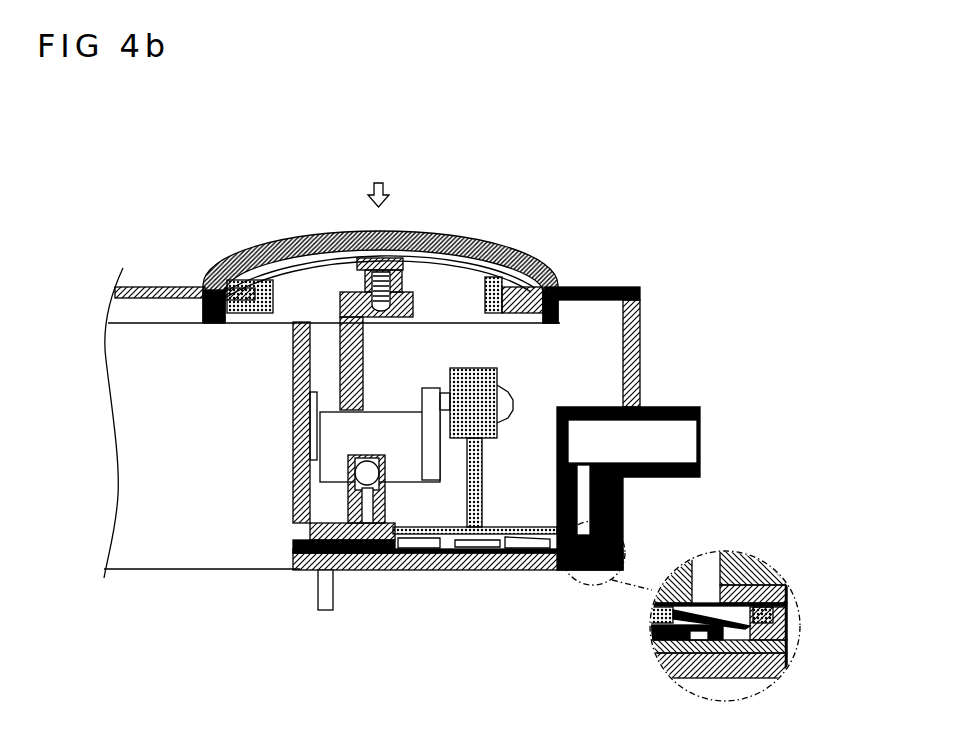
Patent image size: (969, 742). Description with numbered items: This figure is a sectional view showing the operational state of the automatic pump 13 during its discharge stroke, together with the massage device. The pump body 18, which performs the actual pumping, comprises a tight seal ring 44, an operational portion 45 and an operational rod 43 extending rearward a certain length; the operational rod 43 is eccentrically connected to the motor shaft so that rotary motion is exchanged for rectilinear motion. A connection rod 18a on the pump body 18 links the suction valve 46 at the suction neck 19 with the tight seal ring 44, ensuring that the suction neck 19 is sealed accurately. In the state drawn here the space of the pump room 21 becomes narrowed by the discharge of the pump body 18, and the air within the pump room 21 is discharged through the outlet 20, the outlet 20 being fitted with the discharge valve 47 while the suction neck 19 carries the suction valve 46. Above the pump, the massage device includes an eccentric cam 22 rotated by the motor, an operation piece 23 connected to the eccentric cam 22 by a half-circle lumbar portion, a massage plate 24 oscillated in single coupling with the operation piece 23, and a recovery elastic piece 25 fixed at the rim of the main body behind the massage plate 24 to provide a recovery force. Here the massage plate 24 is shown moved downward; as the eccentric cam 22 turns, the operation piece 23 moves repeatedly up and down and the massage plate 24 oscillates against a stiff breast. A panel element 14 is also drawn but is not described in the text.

The automatic pump 13 is at (414, 343).
The panel 14 is at (178, 287).
The pump body 18 is at (492, 485).
The connection rod 18a is at (787, 637).
The suction neck 19 is at (633, 494).
The outlet 20 is at (333, 572).
The pump room 21 is at (480, 560).
The eccentric cam 22 is at (387, 433).
The operation piece 23 is at (347, 312).
The massage plate 24 is at (333, 230).
The recovery elastic piece 25 is at (498, 253).
The operational rod 43 is at (410, 570).
The tight seal ring 44 is at (787, 612).
The operational portion 45 is at (537, 570).
The suction valve 46 is at (757, 680).
The discharge valve 47 is at (368, 568).